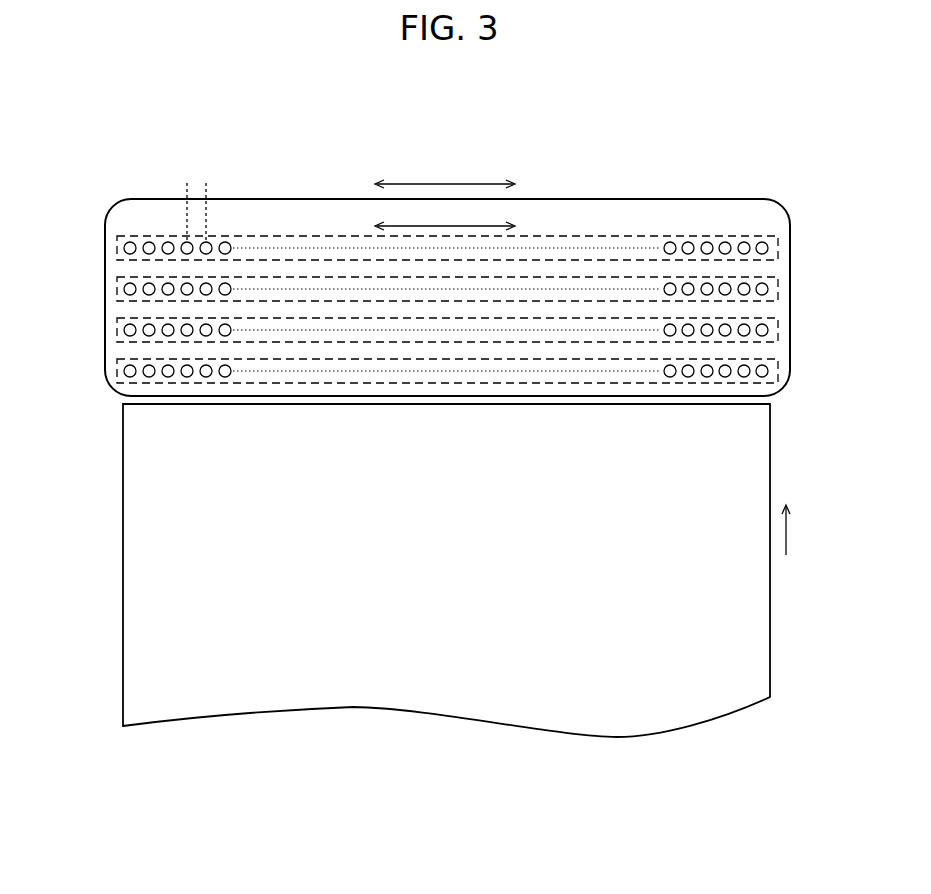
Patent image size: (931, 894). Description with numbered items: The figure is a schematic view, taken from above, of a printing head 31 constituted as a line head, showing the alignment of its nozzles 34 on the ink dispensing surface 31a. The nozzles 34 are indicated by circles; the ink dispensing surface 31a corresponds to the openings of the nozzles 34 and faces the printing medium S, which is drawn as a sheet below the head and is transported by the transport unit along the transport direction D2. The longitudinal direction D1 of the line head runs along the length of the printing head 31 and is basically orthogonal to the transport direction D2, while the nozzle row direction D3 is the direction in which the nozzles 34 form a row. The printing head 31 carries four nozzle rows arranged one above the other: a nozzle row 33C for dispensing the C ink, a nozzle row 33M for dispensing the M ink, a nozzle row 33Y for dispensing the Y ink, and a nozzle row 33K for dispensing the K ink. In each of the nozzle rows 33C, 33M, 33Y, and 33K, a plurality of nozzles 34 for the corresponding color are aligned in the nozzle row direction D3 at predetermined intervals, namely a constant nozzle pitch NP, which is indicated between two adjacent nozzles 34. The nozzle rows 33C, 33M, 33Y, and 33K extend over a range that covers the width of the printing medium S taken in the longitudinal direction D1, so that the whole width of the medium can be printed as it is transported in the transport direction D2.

The printing head 31 is at (627, 198).
The ink dispensing surface 31a is at (732, 205).
The nozzle row 33C is at (410, 212).
The nozzle row 33M is at (116, 288).
The nozzle row 33Y is at (116, 329).
The nozzle row 33K is at (116, 370).
The nozzles 34 is at (168, 242).
The nozzle pitch NP is at (227, 183).
The longitudinal direction D1 is at (445, 174).
The transport direction D2 is at (801, 530).
The nozzle row direction D3 is at (445, 216).
The printing medium S is at (308, 700).